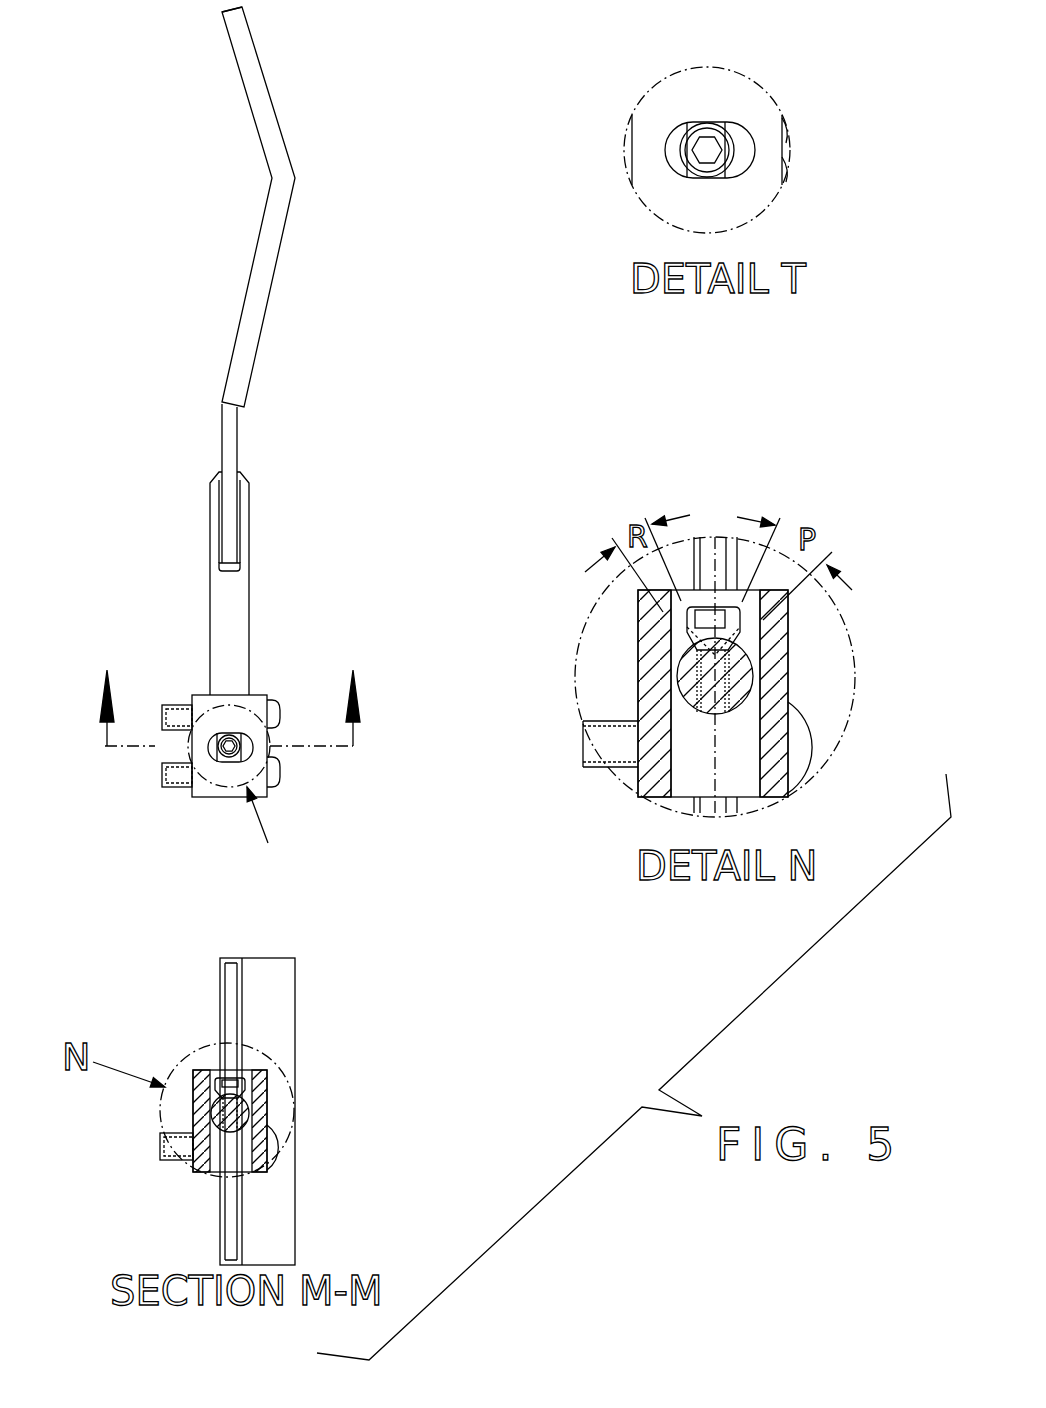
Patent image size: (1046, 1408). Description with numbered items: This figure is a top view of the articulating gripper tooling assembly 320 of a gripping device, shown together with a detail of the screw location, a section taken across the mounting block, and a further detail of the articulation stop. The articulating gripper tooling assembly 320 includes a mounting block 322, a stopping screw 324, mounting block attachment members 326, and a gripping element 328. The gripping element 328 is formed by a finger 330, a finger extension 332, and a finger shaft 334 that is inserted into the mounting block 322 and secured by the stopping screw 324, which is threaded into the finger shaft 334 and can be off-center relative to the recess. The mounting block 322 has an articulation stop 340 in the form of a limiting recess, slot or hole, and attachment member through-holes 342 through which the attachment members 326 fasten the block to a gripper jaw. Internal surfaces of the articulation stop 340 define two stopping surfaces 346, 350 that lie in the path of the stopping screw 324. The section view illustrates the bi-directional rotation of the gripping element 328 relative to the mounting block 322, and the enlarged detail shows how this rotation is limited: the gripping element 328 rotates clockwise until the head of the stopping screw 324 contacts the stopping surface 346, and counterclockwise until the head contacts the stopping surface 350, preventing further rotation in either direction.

The articulating gripper tooling assembly 320 is at (298, 123).
The mounting block 322 is at (210, 793).
The stopping screw 324 is at (229, 746).
The mounting block attachment member 326 is at (275, 712).
The gripping element 328 is at (277, 210).
The finger 330 is at (237, 32).
The finger extension 332 is at (228, 443).
The finger shaft 334 is at (233, 617).
The articulation stop 340 is at (230, 747).
The attachment member through-hole 342 is at (192, 705).
The stopping surface 346 is at (766, 679).
The stopping surface 350 is at (670, 728).